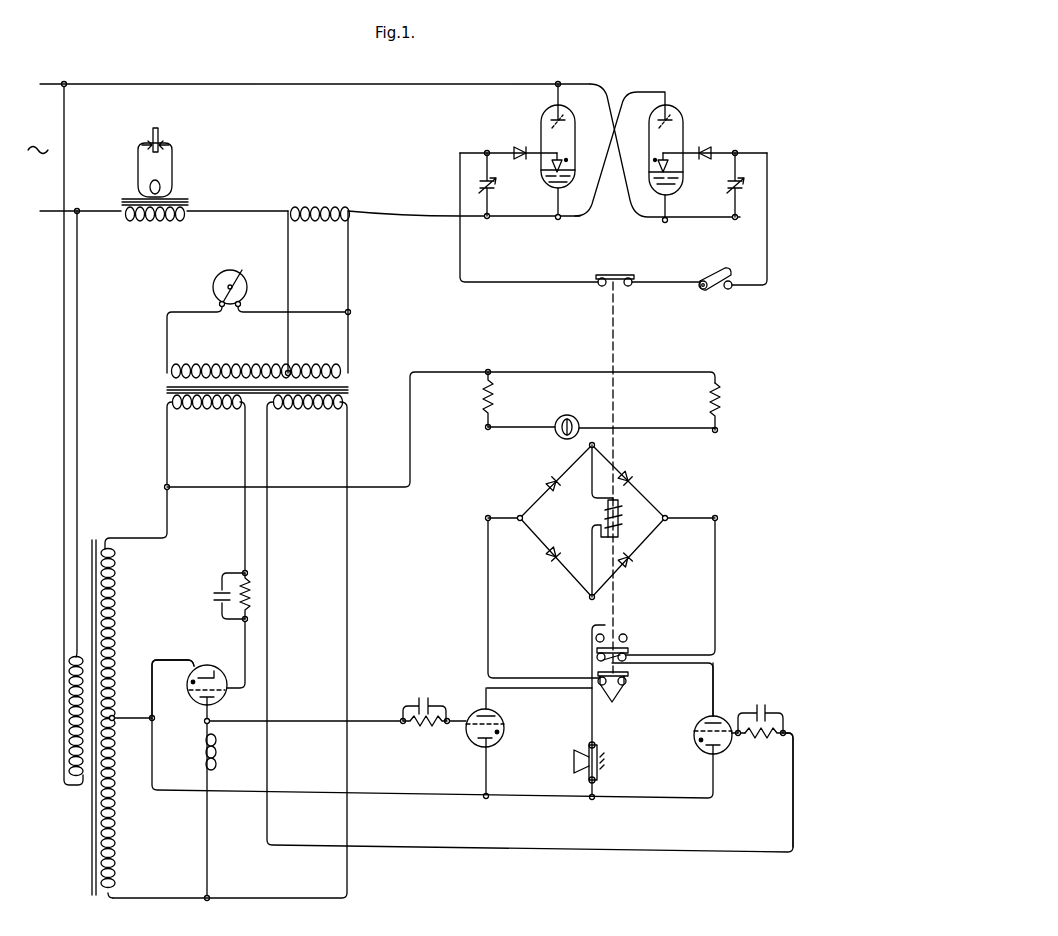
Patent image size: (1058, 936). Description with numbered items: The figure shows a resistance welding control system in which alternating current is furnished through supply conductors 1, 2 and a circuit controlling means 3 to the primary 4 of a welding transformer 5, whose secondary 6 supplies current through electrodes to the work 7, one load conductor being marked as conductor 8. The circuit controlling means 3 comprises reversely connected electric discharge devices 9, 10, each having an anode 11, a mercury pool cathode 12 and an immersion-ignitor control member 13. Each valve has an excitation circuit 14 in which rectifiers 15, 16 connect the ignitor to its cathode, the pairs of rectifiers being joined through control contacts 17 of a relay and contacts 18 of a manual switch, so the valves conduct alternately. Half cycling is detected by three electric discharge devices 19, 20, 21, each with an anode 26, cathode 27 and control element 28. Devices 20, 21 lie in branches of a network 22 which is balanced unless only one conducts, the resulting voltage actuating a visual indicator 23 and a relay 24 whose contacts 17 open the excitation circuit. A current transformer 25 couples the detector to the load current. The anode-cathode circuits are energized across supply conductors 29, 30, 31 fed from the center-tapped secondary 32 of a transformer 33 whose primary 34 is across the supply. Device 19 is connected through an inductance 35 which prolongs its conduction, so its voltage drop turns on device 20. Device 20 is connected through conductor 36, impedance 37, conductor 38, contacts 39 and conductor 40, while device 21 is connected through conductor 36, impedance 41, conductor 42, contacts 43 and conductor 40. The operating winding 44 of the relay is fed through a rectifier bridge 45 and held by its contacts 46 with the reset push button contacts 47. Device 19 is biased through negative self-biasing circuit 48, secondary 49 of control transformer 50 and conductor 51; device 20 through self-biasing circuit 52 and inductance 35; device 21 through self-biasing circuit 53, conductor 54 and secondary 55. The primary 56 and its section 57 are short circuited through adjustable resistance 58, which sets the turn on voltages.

The supply conductor 1 is at (92, 82).
The supply conductor 2 is at (85, 212).
The circuit controlling means 3 is at (614, 89).
The primary 4 is at (146, 216).
The welding transformer 5 is at (189, 200).
The secondary 6 is at (160, 182).
The work 7 is at (160, 142).
The load conductor 8 is at (402, 217).
The electric discharge device 9 is at (577, 142).
The electric discharge device 10 is at (684, 124).
The anode 11 is at (542, 128).
The mercury pool cathode 12 is at (546, 186).
The control member 13 is at (552, 165).
The excitation circuit 14 is at (517, 284).
The rectifier 15 is at (483, 186).
The rectifier 16 is at (518, 150).
The control contacts 17 is at (626, 288).
The control contacts 18 is at (706, 280).
The electric discharge device 19 is at (203, 666).
The electric discharge device 20 is at (503, 712).
The electric discharge device 21 is at (705, 717).
The network 22 is at (560, 605).
The visual indicator 23 is at (560, 416).
The relay 24 is at (620, 337).
The current transformer 25 is at (315, 206).
The anode 26 is at (200, 706).
The cathode 27 is at (217, 672).
The control element 28 is at (190, 692).
The supply conductor 29 is at (147, 543).
The supply conductor 30 is at (134, 716).
The supply conductor 31 is at (147, 895).
The secondary 32 is at (112, 830).
The transformer 33 is at (93, 538).
The primary 34 is at (69, 707).
The inductance 35 is at (217, 748).
The conductor 36 is at (385, 491).
The impedance 37 is at (480, 402).
The conductor 38 is at (486, 597).
The contacts 39 is at (613, 699).
The conductor 40 is at (366, 790).
The impedance 41 is at (723, 403).
The conductor 42 is at (717, 588).
The contacts 43 is at (598, 657).
The operating winding 44 is at (620, 515).
The rectifier bridge 45 is at (536, 505).
The contacts 46 is at (605, 636).
The contacts of reset push button switch 47 is at (582, 770).
The negative self-biasing circuit 48 is at (233, 580).
The secondary 49 is at (199, 410).
The control transformer 50 is at (165, 389).
The conductor 51 is at (175, 658).
The negative self-biasing circuit 52 is at (417, 728).
The negative self-biasing circuit 53 is at (761, 736).
The conductor 54 is at (268, 582).
The secondary 55 is at (304, 410).
The primary 56 is at (320, 364).
The section 57 is at (233, 362).
The adjustable resistance 58 is at (213, 287).